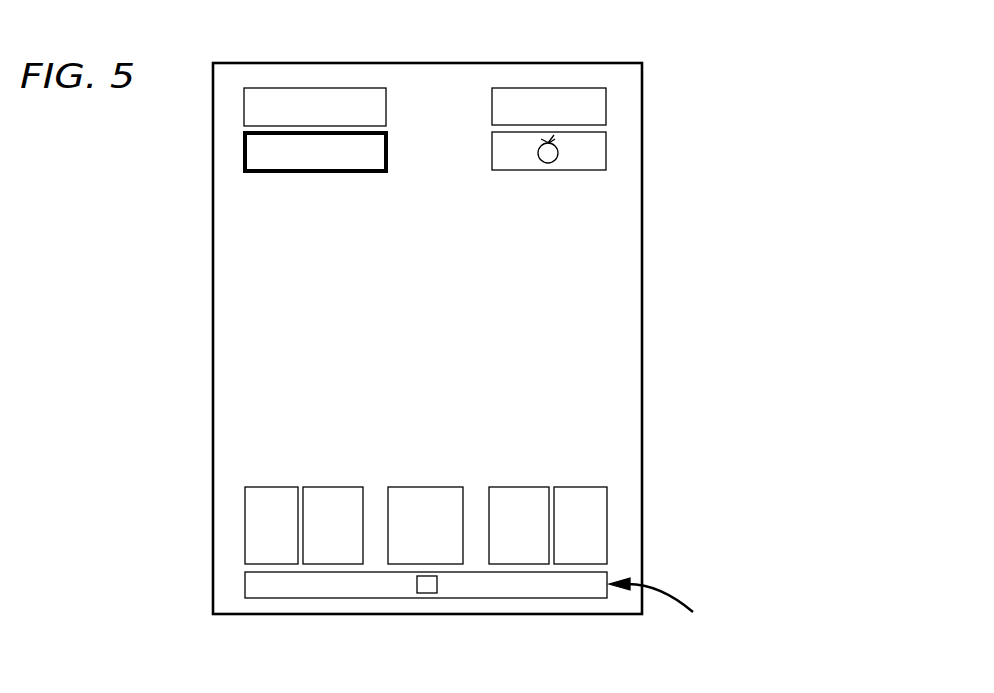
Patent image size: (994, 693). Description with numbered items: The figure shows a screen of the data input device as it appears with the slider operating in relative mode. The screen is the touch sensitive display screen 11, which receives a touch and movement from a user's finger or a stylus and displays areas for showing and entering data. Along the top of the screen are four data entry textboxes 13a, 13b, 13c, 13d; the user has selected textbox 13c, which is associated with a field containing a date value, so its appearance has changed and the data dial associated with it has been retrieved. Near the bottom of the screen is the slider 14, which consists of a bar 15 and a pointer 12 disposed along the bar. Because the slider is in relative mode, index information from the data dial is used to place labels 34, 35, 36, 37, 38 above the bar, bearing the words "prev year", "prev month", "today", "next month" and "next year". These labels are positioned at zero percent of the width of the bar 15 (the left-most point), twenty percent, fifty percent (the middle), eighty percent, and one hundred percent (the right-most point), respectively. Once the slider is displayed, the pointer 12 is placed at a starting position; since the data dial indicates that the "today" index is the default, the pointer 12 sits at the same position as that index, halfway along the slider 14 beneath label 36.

The touch sensitive display screen 11 is at (441, 63).
The pointer 12 is at (428, 598).
The data entry textbox 13a is at (244, 108).
The data entry textbox 13b is at (606, 107).
The data entry textbox 13c is at (244, 153).
The data entry textbox 13d is at (606, 152).
The slider 14 is at (663, 604).
The bar 15 is at (245, 587).
The label 34 is at (270, 487).
The label 35 is at (332, 487).
The label 36 is at (424, 487).
The label 37 is at (521, 487).
The label 38 is at (583, 487).